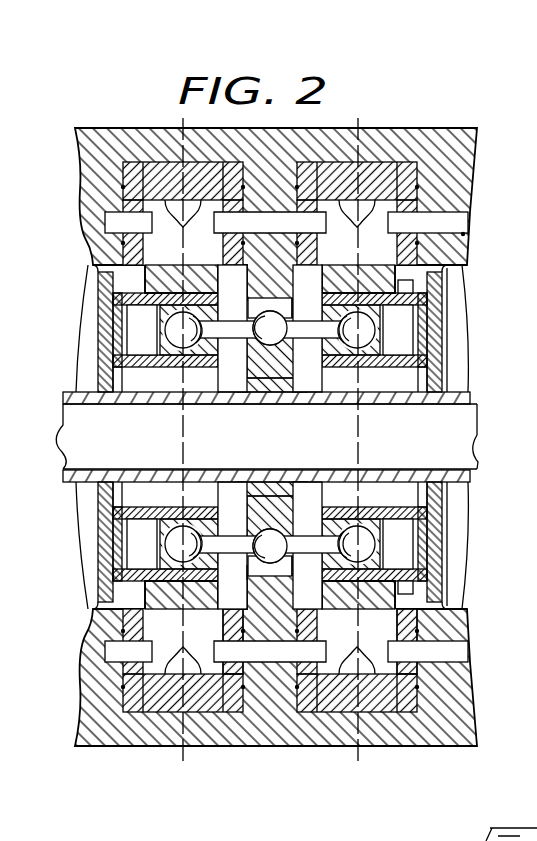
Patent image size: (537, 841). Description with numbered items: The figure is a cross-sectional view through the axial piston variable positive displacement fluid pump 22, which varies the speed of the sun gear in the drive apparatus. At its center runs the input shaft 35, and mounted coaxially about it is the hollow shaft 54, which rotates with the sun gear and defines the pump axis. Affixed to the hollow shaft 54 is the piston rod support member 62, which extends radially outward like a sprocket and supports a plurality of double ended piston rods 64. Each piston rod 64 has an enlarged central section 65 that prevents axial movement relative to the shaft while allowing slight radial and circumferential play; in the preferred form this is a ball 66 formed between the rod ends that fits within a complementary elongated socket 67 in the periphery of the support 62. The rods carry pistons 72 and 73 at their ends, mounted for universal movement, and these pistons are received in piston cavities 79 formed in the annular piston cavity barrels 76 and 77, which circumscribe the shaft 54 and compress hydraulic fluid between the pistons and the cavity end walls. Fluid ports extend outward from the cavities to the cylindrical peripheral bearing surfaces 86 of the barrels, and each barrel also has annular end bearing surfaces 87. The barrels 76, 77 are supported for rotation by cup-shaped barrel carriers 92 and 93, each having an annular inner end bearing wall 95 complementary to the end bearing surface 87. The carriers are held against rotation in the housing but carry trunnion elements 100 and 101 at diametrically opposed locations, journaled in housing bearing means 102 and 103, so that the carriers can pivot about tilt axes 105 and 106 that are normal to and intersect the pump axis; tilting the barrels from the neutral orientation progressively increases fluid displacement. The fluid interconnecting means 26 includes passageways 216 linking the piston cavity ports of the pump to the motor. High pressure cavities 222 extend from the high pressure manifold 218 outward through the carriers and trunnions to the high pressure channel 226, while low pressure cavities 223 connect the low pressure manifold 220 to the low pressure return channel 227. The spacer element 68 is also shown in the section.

The trunnion element 100 is at (238, 161).
The housing bearing means 102 is at (148, 160).
The trunnion element 101 is at (131, 712).
The housing bearing means 103 is at (230, 712).
The tilt axis 105 is at (183, 762).
The tilt axis 106 is at (358, 762).
The passageway 216 is at (392, 207).
The high pressure channel 226 is at (462, 217).
The fluid interconnecting means 26 is at (463, 234).
The high pressure cavity 222 is at (203, 250).
The low pressure cavity 223 is at (213, 631).
The low pressure channel 227 is at (463, 645).
The annular piston cavity barrel 76 is at (143, 510).
The annular piston cavity barrel 77 is at (368, 512).
The cylindrical peripheral bearing surface 86 is at (203, 275).
The annular inner end bearing wall 95 is at (115, 339).
The barrel carrier 92 is at (98, 311).
The barrel carrier 93 is at (448, 292).
The axial piston variable positive displacement fluid pump 22 is at (453, 548).
The annular end bearing surface 87 is at (432, 315).
The piston cavity 79 is at (152, 345).
The piston 72 is at (160, 314).
The piston 73 is at (386, 312).
The double ended piston rod 64 is at (220, 333).
The piston rod support member 62 is at (250, 509).
The spacer 68 is at (224, 553).
The enlarged central section 65 is at (268, 308).
The elongated socket 67 is at (283, 302).
The ball 66 is at (285, 328).
The high pressure manifold 218 is at (410, 285).
The low pressure manifold 220 is at (418, 592).
The hollow shaft 54 is at (467, 394).
The input shaft 35 is at (258, 448).